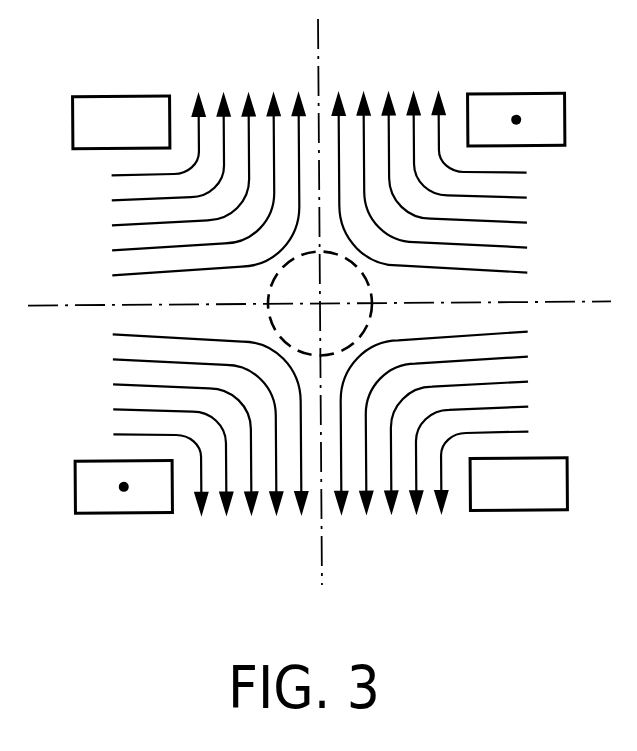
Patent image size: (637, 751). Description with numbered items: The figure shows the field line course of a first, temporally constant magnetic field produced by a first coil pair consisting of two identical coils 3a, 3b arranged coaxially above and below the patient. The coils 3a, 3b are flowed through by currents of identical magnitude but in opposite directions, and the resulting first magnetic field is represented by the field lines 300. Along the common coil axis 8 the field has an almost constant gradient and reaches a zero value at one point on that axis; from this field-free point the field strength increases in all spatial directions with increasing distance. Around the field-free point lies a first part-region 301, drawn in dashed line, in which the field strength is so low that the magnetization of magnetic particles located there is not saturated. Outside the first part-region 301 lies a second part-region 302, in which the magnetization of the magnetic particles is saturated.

The coil 3a is at (132, 95).
The coil 3b is at (135, 512).
The common coil axis 8 is at (320, 42).
The field lines 300 is at (313, 303).
The first part-region 301 is at (356, 296).
The second part-region 302 is at (122, 397).